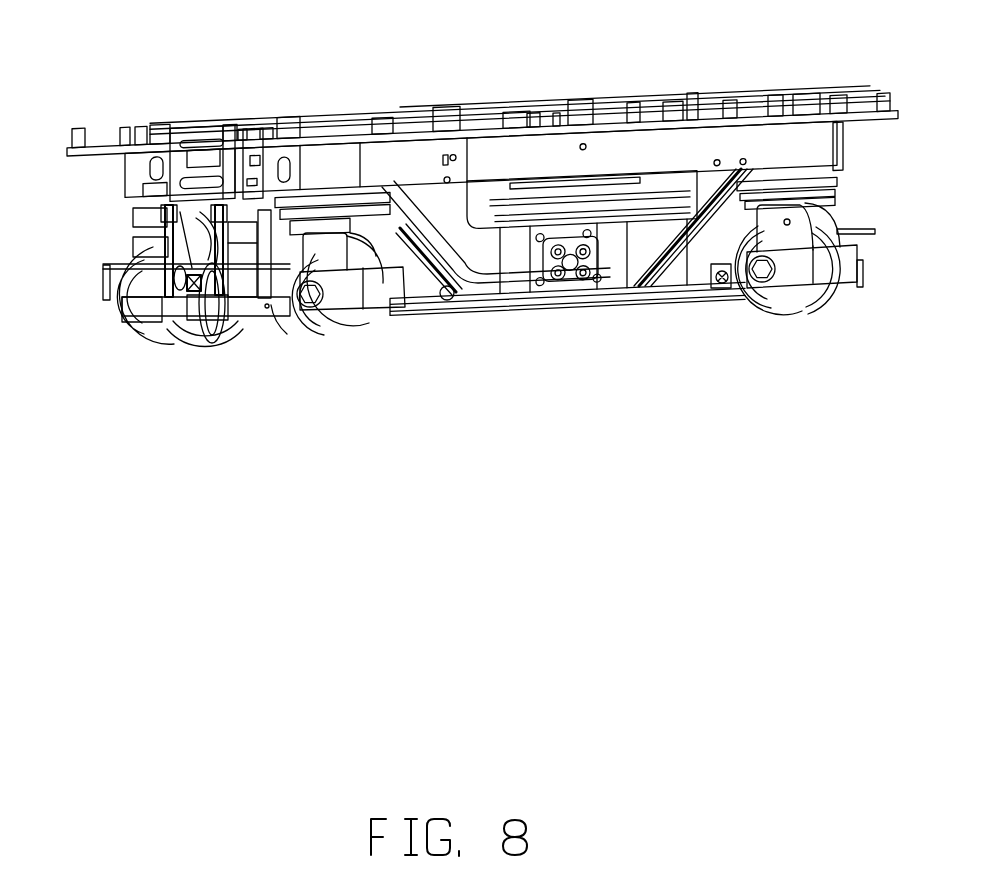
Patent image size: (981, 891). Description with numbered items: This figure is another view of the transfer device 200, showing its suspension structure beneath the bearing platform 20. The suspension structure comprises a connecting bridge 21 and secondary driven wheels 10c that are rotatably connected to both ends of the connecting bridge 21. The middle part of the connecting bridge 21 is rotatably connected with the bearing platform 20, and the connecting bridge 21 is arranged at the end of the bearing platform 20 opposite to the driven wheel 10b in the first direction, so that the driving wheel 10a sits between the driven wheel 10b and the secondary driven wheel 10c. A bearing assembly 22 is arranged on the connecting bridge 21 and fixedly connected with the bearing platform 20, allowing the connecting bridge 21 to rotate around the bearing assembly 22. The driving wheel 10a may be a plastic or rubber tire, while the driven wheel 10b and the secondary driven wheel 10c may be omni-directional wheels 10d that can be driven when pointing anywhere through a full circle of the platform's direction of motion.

The transfer device 200 is at (532, 43).
The bearing platform 20 is at (827, 142).
The connecting bridge 21 is at (485, 263).
The bearing assembly 22 is at (583, 260).
The driving wheel 10a is at (208, 243).
The driven wheel 10b is at (107, 290).
The secondary driven wheel 10c is at (838, 352).
The omni-directional wheels 10d is at (457, 308).